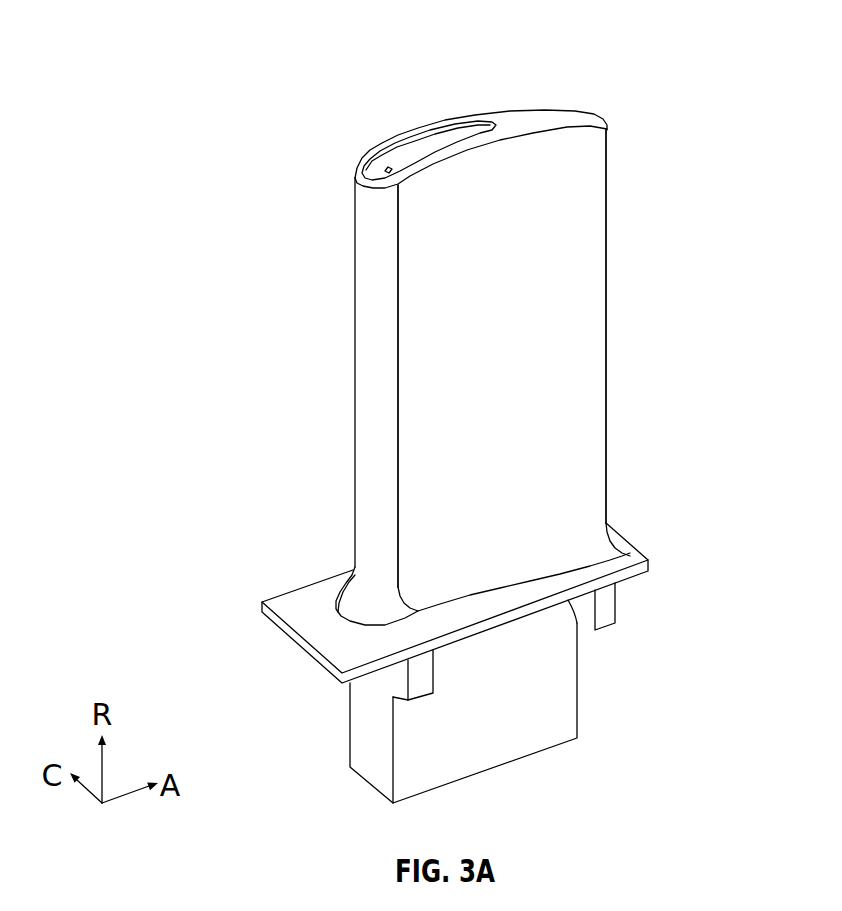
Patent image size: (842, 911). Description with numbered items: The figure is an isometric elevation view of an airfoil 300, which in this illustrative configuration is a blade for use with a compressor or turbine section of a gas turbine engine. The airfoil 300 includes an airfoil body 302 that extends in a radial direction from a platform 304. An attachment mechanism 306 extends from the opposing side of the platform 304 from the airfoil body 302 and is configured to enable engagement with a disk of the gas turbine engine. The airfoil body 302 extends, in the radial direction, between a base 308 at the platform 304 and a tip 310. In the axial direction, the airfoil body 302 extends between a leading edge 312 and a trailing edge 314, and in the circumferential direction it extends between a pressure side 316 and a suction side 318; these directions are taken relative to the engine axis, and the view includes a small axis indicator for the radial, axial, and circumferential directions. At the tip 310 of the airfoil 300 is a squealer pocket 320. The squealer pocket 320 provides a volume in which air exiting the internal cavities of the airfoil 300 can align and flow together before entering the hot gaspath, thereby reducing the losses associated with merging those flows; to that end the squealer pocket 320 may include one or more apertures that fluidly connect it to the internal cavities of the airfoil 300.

The airfoil 300 is at (222, 44).
The airfoil body 302 is at (367, 387).
The platform 304 is at (262, 602).
The attachment mechanism 306 is at (570, 707).
The base 308 is at (335, 612).
The tip 310 is at (552, 118).
The leading edge 312 is at (368, 472).
The trailing edge 314 is at (607, 268).
The pressure side 316 is at (581, 434).
The suction side 318 is at (343, 252).
The squealer pocket 320 is at (406, 141).